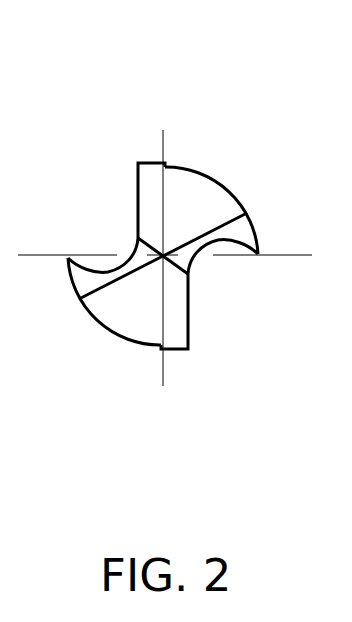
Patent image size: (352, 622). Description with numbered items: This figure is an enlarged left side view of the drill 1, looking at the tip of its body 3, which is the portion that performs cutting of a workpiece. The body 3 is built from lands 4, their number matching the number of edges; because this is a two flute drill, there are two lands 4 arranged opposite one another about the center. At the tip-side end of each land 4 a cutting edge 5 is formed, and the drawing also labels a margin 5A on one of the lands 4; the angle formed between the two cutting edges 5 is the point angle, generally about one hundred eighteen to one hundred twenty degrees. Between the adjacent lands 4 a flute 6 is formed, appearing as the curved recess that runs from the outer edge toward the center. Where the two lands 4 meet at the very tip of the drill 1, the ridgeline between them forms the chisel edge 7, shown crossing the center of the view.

The drill 1 is at (270, 108).
The body 3 is at (75, 317).
The land 4 is at (230, 190).
The cutting edge 5 is at (192, 328).
The margin 5A is at (137, 180).
The flute 6 is at (108, 235).
The chisel edge 7 is at (185, 258).